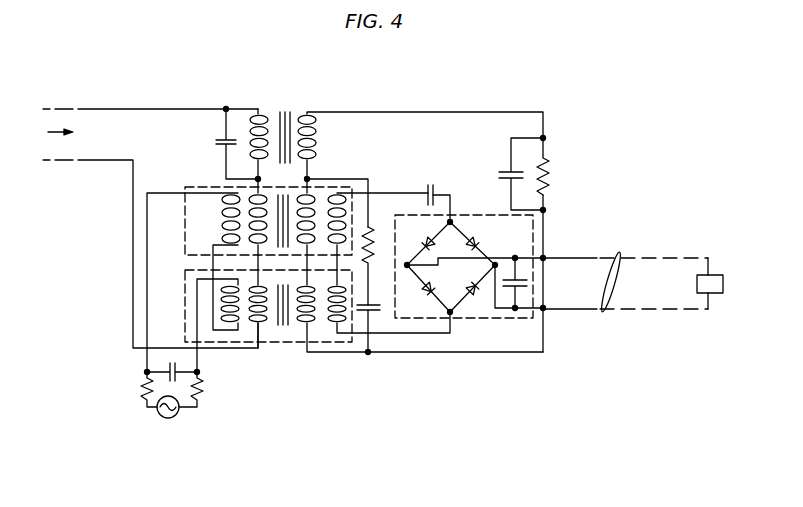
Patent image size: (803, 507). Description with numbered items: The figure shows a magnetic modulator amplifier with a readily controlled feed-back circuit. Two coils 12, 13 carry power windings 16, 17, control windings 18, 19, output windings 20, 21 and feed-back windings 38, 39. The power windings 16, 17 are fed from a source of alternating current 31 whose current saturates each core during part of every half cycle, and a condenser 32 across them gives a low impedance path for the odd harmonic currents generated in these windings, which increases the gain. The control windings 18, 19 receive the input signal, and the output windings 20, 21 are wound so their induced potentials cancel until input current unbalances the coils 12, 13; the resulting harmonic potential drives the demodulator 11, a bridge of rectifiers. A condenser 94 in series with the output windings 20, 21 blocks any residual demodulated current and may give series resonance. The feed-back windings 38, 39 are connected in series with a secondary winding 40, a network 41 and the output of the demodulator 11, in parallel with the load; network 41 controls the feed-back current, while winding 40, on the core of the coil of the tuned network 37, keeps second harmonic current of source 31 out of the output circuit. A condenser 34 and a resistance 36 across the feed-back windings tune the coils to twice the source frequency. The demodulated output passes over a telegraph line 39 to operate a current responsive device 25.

The demodulator 11 is at (543, 228).
The coil 12 is at (185, 219).
The coil 13 is at (185, 305).
The power winding 16 is at (222, 214).
The power winding 17 is at (233, 331).
The control winding 18 is at (255, 199).
The control winding 19 is at (262, 325).
The output winding 20 is at (341, 200).
The output winding 21 is at (341, 327).
The current responsive device 25 is at (724, 284).
The source of alternating current 31 is at (175, 414).
The condenser 32 is at (145, 369).
The condenser 34 is at (375, 313).
The resistance 36 is at (374, 232).
The network 37 is at (258, 113).
The feed-back winding 38 is at (312, 193).
The feed-back winding / telegraph line 39 is at (312, 328).
The secondary winding 40 is at (316, 125).
The network 41 is at (523, 160).
The condenser 94 is at (434, 193).